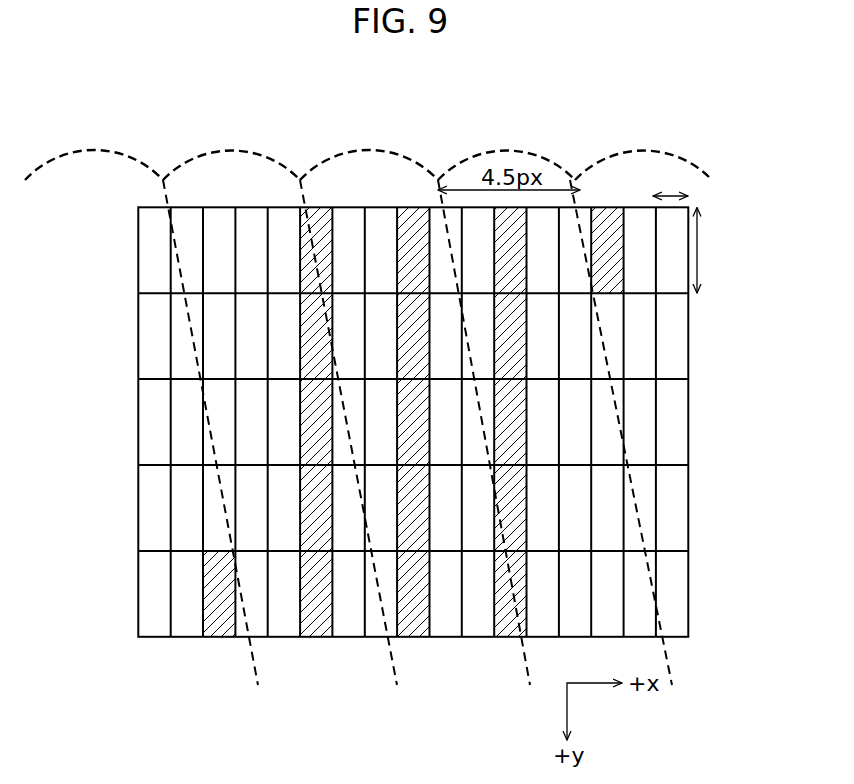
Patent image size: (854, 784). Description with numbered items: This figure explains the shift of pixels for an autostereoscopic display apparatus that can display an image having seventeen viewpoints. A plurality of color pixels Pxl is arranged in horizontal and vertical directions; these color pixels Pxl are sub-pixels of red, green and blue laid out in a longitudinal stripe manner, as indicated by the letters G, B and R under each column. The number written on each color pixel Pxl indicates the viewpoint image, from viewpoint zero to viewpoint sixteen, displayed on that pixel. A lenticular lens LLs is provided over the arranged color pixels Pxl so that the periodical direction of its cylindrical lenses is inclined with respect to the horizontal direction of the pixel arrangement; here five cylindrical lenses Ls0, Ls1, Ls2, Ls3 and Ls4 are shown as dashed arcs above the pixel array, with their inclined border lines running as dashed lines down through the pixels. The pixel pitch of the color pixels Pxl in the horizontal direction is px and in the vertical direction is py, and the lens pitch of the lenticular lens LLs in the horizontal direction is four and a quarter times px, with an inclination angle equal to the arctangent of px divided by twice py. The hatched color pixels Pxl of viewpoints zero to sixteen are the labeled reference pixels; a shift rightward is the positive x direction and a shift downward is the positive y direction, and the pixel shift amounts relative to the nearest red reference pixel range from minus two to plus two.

The lenticular lens LLs is at (368, 160).
The cylindrical lens Ls0 is at (90, 165).
The cylindrical lens Ls1 is at (227, 165).
The cylindrical lens Ls2 is at (388, 165).
The cylindrical lens Ls3 is at (521, 163).
The cylindrical lens Ls4 is at (637, 160).
The color pixel Pxl is at (688, 317).
The pixel pitch in horizontal direction px is at (670, 181).
The pixel pitch in vertical direction py is at (713, 251).